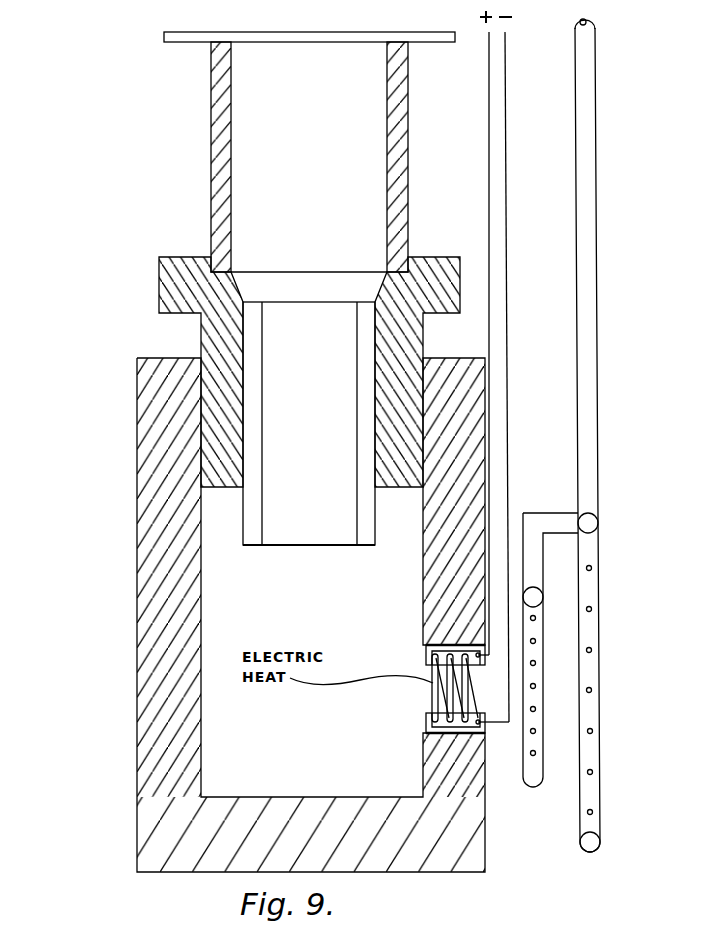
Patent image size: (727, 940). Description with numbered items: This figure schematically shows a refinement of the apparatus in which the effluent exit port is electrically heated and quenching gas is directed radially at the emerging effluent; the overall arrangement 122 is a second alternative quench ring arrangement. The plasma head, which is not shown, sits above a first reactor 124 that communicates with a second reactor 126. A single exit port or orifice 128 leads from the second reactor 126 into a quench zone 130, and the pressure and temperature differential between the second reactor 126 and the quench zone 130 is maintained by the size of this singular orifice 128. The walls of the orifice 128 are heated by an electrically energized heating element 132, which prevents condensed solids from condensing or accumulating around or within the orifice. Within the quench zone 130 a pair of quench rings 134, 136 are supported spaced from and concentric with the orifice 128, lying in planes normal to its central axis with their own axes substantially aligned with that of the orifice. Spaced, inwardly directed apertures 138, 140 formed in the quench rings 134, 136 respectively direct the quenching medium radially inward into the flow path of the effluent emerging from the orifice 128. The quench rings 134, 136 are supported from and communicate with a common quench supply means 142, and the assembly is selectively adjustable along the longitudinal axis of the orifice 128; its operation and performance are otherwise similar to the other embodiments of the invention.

The plug assembly 122 is at (178, 222).
The first reactor 124 is at (407, 180).
The second reactor 126 is at (147, 569).
The exit orifice 128 is at (428, 714).
The quench zone 130 is at (593, 448).
The heating element 132 is at (430, 650).
The quench ring 134 is at (528, 787).
The quench ring 136 is at (597, 851).
The apertures 138 is at (536, 732).
The apertures 140 is at (593, 772).
The outer electrode tube 142 is at (597, 395).